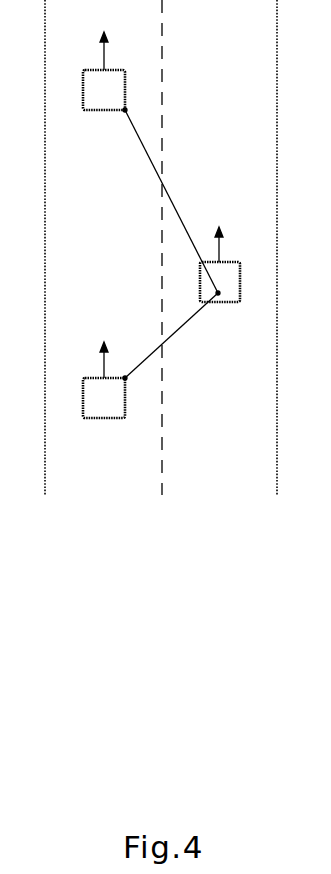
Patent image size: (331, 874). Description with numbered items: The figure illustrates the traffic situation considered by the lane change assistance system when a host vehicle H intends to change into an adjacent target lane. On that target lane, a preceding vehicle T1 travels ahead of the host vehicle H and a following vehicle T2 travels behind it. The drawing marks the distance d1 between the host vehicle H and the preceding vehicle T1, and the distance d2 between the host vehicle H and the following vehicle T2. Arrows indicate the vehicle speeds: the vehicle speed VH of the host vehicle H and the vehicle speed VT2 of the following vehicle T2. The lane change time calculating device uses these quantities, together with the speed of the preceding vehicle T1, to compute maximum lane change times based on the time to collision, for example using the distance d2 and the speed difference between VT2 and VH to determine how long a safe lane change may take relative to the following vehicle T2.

The preceding vehicle T1 is at (104, 90).
The following vehicle T2 is at (104, 398).
The host vehicle H is at (220, 282).
The vehicle speed of the following vehicle VT2 is at (80, 205).
The vehicle speed of the host vehicle VH is at (233, 244).
The distance between the host vehicle and the preceding vehicle d1 is at (171, 201).
The distance between the host vehicle and the following vehicle d2 is at (170, 336).